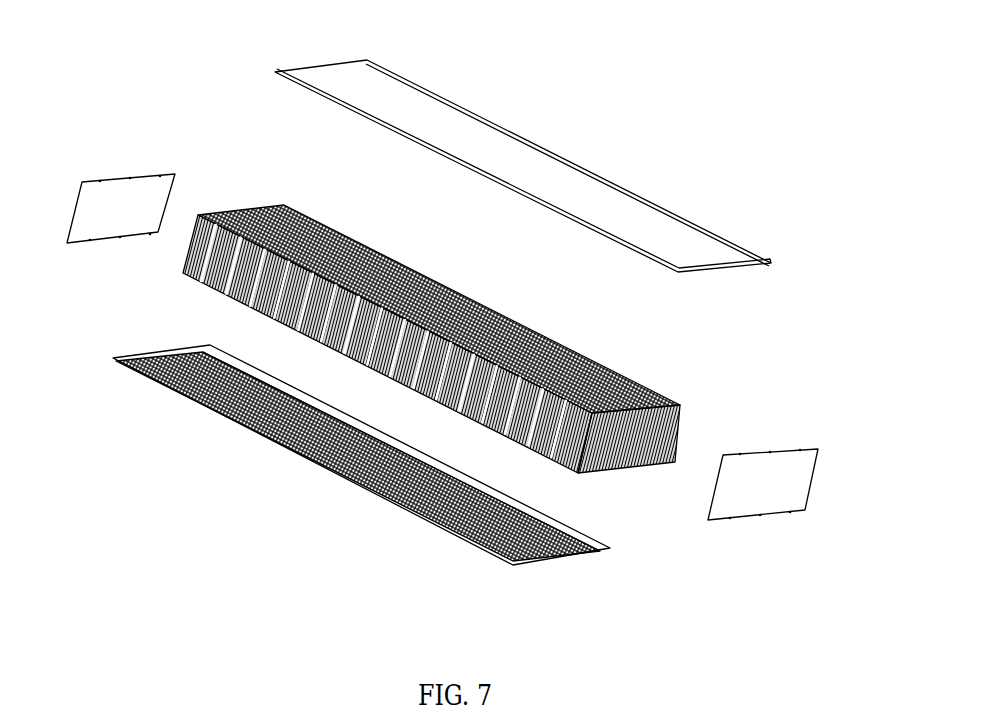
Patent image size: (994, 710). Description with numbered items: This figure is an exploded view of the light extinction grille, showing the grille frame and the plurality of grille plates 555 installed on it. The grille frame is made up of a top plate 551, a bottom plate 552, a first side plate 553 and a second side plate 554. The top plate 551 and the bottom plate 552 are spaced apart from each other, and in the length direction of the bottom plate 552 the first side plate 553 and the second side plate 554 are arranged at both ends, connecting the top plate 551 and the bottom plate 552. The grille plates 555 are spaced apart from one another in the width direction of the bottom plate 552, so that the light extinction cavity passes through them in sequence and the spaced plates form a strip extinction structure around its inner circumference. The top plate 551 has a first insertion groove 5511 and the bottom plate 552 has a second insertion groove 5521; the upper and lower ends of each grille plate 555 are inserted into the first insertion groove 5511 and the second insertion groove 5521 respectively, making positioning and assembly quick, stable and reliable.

The top plate 551 is at (610, 200).
The first insertion groove 5511 is at (707, 265).
The bottom plate 552 is at (487, 547).
The second insertion groove 5521 is at (168, 378).
The first side plate 553 is at (793, 477).
The second side plate 554 is at (115, 202).
The grille plate 555 is at (570, 472).